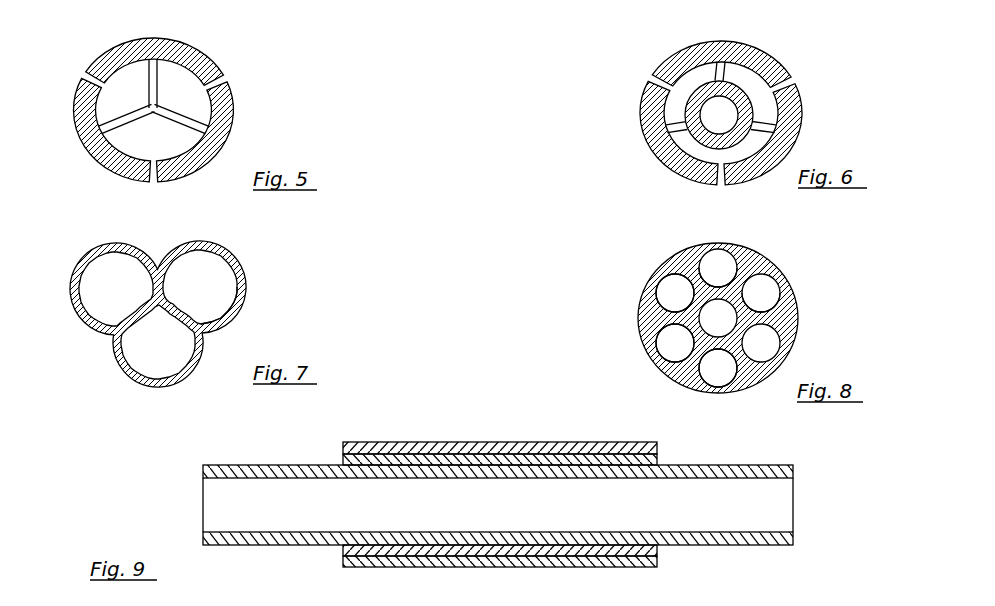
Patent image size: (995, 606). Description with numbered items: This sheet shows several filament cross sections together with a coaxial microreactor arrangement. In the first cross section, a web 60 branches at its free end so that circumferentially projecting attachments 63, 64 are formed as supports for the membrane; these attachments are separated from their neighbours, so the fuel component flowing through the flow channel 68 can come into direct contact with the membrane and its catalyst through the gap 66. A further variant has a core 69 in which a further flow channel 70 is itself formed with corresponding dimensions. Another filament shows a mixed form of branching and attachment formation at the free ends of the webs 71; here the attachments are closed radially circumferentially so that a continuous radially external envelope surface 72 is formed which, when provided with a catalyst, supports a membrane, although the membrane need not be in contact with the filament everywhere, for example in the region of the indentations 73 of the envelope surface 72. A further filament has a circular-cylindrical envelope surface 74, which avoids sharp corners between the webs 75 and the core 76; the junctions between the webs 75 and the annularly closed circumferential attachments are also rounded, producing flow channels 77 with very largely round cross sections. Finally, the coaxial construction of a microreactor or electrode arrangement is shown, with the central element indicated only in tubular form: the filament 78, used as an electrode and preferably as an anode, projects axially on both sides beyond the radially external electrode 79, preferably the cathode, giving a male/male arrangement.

In FIG. 5, the web 60 is at (137, 58).
In FIG. 5, the attachment 63 is at (233, 107).
In FIG. 5, the attachment 64 is at (177, 175).
In FIG. 5, the gap 66 is at (192, 122).
In FIG. 5, the flow channel 68 is at (166, 150).
In FIG. 6, the core 69 is at (680, 93).
In FIG. 6, the further flow channel 70 is at (717, 117).
In FIG. 7, the web 71 is at (133, 317).
In FIG. 7, the envelope surface 72 is at (247, 278).
In FIG. 7, the indentation 73 is at (194, 327).
In FIG. 8, the circular-cylindrical envelope surface 74 is at (694, 302).
In FIG. 8, the web 75 is at (666, 264).
In FIG. 8, the core 76 is at (690, 300).
In FIG. 8, the flow channel 77 is at (713, 363).
In FIG. 9, the filament 78 is at (257, 517).
In FIG. 9, the radially external electrode 79 is at (655, 443).